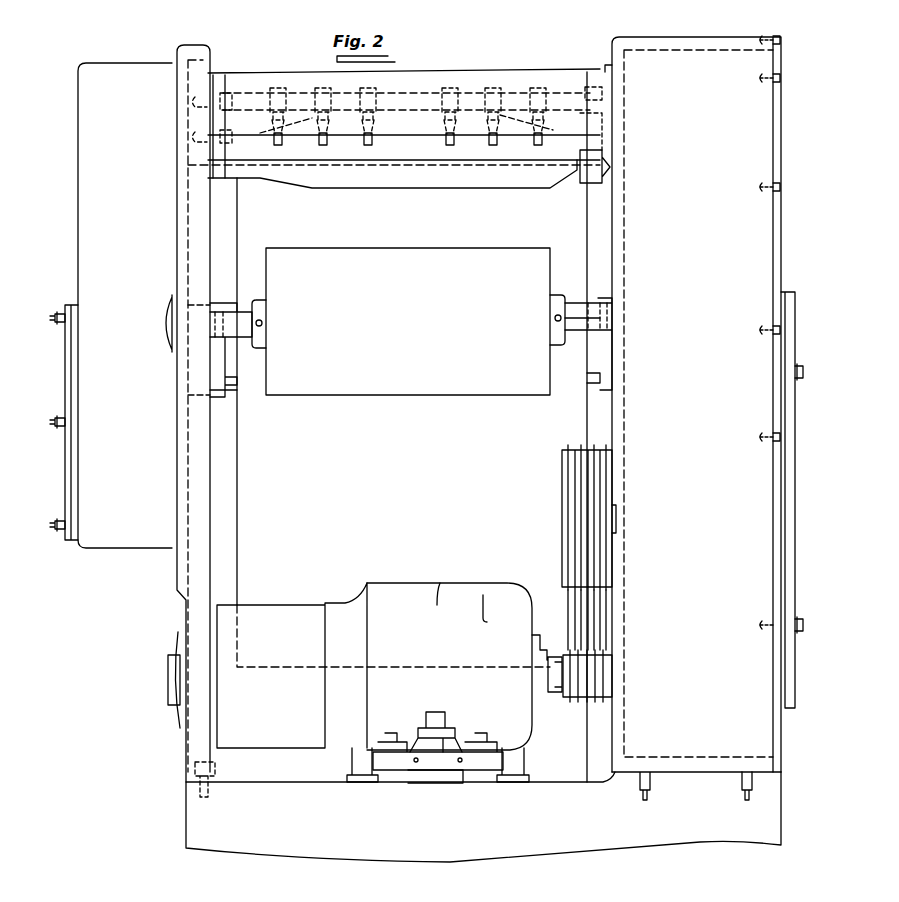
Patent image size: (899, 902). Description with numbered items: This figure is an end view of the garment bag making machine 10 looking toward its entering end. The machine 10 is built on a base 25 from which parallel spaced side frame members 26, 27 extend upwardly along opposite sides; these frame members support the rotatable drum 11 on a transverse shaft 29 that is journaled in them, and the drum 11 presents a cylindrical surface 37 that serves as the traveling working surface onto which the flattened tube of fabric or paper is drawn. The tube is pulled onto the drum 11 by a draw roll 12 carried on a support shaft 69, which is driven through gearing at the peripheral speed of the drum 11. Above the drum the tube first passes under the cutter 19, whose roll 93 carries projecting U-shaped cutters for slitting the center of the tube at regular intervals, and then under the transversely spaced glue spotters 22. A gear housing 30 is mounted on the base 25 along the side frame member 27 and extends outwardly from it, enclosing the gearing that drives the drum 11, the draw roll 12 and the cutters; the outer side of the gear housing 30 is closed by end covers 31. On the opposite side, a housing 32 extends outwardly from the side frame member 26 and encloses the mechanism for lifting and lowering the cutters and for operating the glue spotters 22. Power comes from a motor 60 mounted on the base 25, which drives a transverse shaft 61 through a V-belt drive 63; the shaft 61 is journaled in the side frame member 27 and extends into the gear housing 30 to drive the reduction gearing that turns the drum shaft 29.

The garment bag making machine 10 is at (180, 610).
The drum 11 is at (585, 235).
The draw roll 12 is at (385, 397).
The cutter 19 is at (507, 173).
The glue spotters 22 is at (280, 147).
The base 25 is at (188, 848).
The side frame member 26 is at (217, 772).
The side frame member 27 is at (598, 775).
The transverse shaft 29 is at (232, 300).
The gear housing 30 is at (690, 38).
The end covers 31 is at (784, 282).
The housing 32 is at (78, 95).
The cylindrical surface 37 is at (265, 504).
The motor 60 is at (437, 605).
The transverse shaft 61 is at (612, 502).
The V-belt drive 63 is at (566, 447).
The support shaft 69 is at (577, 303).
The roll 93 is at (405, 190).